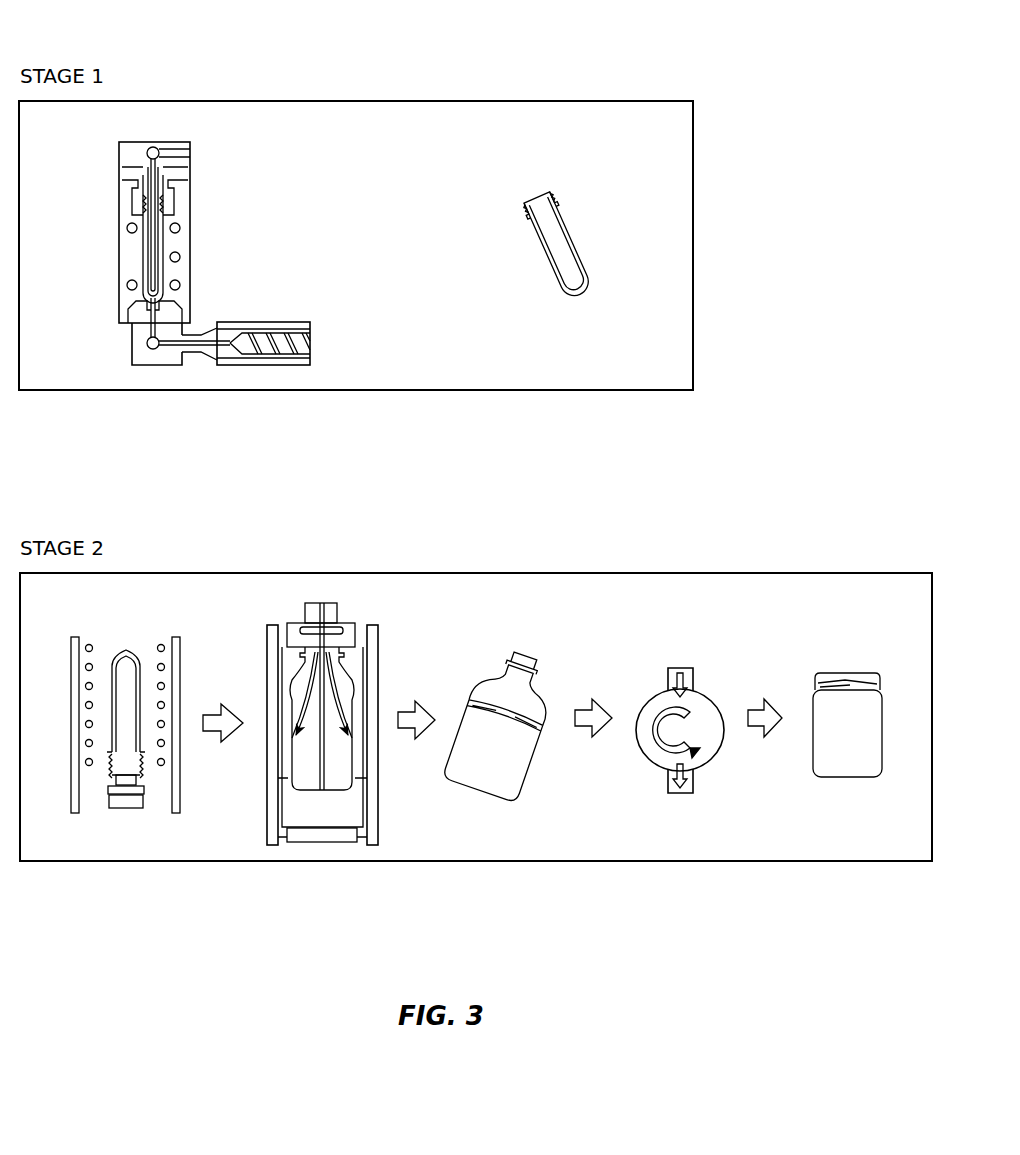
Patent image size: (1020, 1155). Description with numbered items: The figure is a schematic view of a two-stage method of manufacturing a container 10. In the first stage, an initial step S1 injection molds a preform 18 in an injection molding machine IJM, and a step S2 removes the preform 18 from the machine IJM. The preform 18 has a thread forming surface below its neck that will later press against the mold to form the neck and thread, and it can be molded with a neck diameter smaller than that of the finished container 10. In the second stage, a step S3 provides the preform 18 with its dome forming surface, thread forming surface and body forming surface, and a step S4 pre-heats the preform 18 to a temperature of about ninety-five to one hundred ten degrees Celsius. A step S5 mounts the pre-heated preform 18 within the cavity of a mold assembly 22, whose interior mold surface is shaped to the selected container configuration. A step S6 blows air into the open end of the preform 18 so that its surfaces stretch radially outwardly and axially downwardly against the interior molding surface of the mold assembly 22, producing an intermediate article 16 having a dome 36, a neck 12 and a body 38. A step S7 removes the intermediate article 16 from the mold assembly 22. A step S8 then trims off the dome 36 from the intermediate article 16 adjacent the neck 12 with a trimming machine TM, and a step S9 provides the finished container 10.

The initial step S1 is at (179, 213).
The step S2 is at (574, 193).
The injection molding machine IJM is at (104, 318).
The preform 18 is at (584, 274).
The step S3 is at (105, 756).
The step S4 is at (95, 817).
The step S5 is at (336, 720).
The step S6 is at (356, 693).
The mold assembly 22 is at (373, 810).
The step S7 is at (523, 758).
The intermediate article 16 is at (523, 707).
The dome 36 is at (494, 676).
The neck 12 is at (505, 714).
The body 38 is at (492, 751).
The step S8 is at (706, 770).
The trimming machine TM is at (705, 696).
The step S9 is at (865, 776).
The container 10 is at (883, 710).